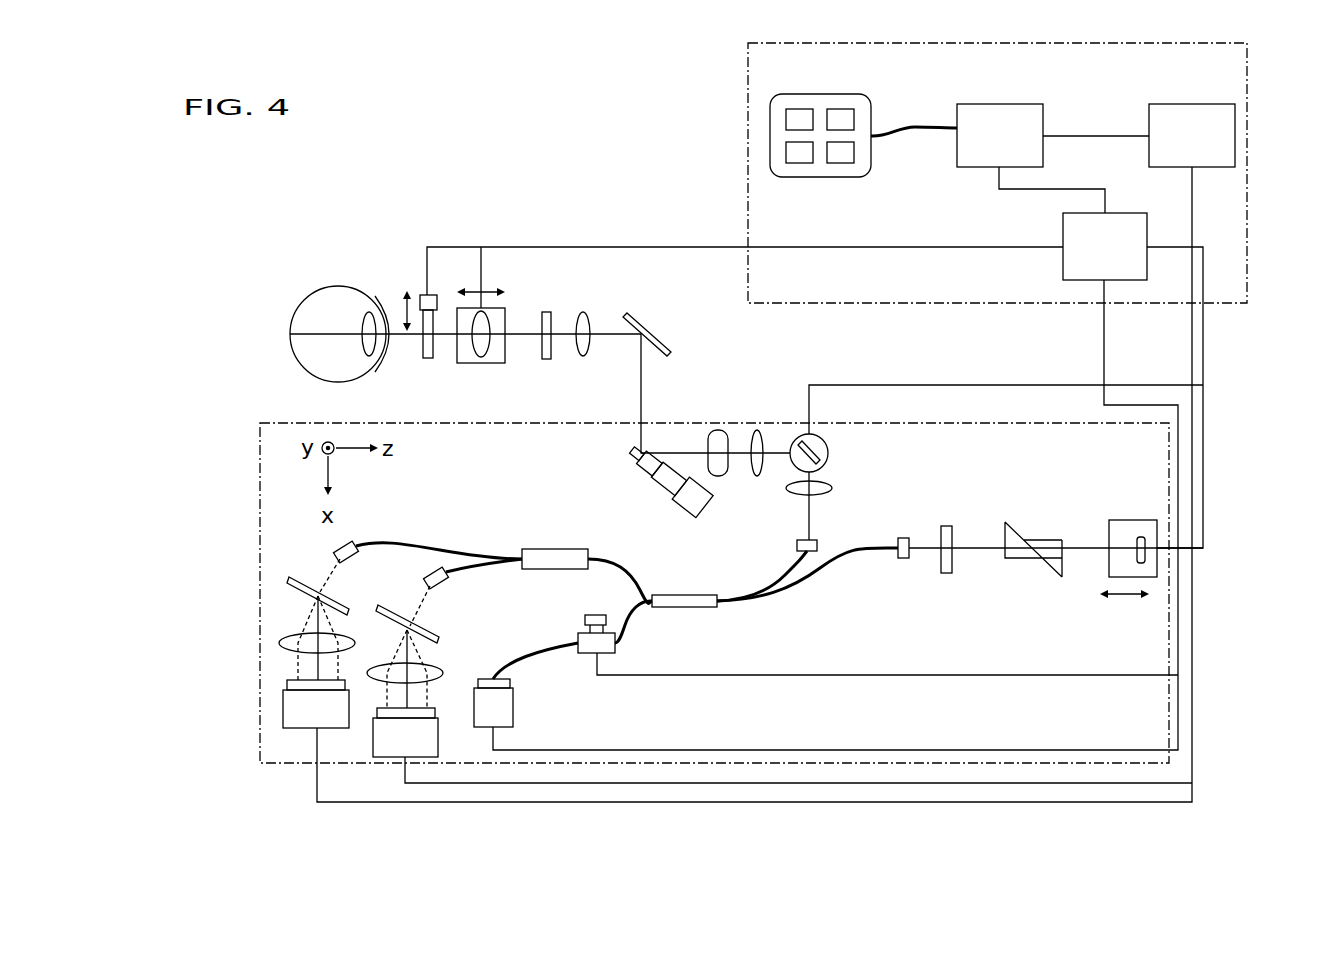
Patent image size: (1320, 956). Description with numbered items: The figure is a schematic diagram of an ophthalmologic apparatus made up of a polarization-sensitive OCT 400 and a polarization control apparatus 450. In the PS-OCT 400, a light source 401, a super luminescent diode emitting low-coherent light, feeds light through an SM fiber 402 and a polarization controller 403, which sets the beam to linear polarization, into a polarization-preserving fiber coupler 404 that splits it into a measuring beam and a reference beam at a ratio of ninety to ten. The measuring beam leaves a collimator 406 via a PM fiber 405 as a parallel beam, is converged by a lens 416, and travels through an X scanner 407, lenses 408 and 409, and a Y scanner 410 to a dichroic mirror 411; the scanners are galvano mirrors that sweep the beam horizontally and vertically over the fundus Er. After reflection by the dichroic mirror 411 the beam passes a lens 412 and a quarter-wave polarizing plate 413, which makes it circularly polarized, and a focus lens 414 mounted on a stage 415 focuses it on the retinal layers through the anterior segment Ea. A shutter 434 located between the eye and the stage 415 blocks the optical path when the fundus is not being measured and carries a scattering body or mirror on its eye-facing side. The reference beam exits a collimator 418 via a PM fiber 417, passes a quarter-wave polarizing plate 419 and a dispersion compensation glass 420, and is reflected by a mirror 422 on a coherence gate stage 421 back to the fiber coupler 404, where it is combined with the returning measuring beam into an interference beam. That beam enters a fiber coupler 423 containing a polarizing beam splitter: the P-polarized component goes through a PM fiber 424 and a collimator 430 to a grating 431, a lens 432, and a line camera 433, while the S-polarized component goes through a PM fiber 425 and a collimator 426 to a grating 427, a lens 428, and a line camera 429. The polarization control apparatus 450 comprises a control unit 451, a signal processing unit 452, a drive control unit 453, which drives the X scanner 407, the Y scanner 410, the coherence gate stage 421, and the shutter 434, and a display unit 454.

The polarization-sensitive OCT (PS-OCT) 400 is at (1090, 763).
The light source 401 is at (513, 712).
The SM fiber 402 is at (540, 653).
The polarization controller 403 is at (594, 613).
The fiber coupler 404 is at (683, 608).
The PM fiber 405 is at (748, 596).
The collimator 406 is at (797, 543).
The X scanner 407 is at (830, 453).
The lens 408 is at (757, 430).
The lens 409 is at (716, 428).
The Y scanner 410 is at (675, 493).
The dichroic mirror 411 is at (636, 318).
The lens 412 is at (588, 358).
The λ/4 polarizing plate 413 is at (547, 360).
The focus lens 414 is at (478, 360).
The stage 415 is at (505, 316).
The lens 416 is at (833, 488).
The PM fiber 417 is at (800, 584).
The collimator 418 is at (901, 560).
The λ/4 polarizing plate 419 is at (947, 575).
The dispersion compensation glass 420 is at (1025, 560).
The coherence gate stage 421 is at (1115, 520).
The mirror 422 is at (1141, 537).
The fiber coupler 423 is at (553, 549).
The PM fiber 424 is at (424, 546).
The PM fiber 425 is at (481, 566).
The collimator 426 is at (436, 590).
The grating 427 is at (437, 640).
The lens 428 is at (385, 662).
The line camera 429 is at (383, 760).
The collimator 430 is at (337, 550).
The grating 431 is at (288, 582).
The lens 432 is at (280, 643).
The line camera 433 is at (283, 712).
The shutter 434 is at (424, 295).
The polarization control apparatus 450 is at (748, 130).
The control unit 451 is at (957, 150).
The signal processing unit 452 is at (1149, 110).
The drive control unit 453 is at (1063, 222).
The display unit 454 is at (820, 177).
The fundus Er is at (290, 338).
The anterior segment Ea is at (386, 356).